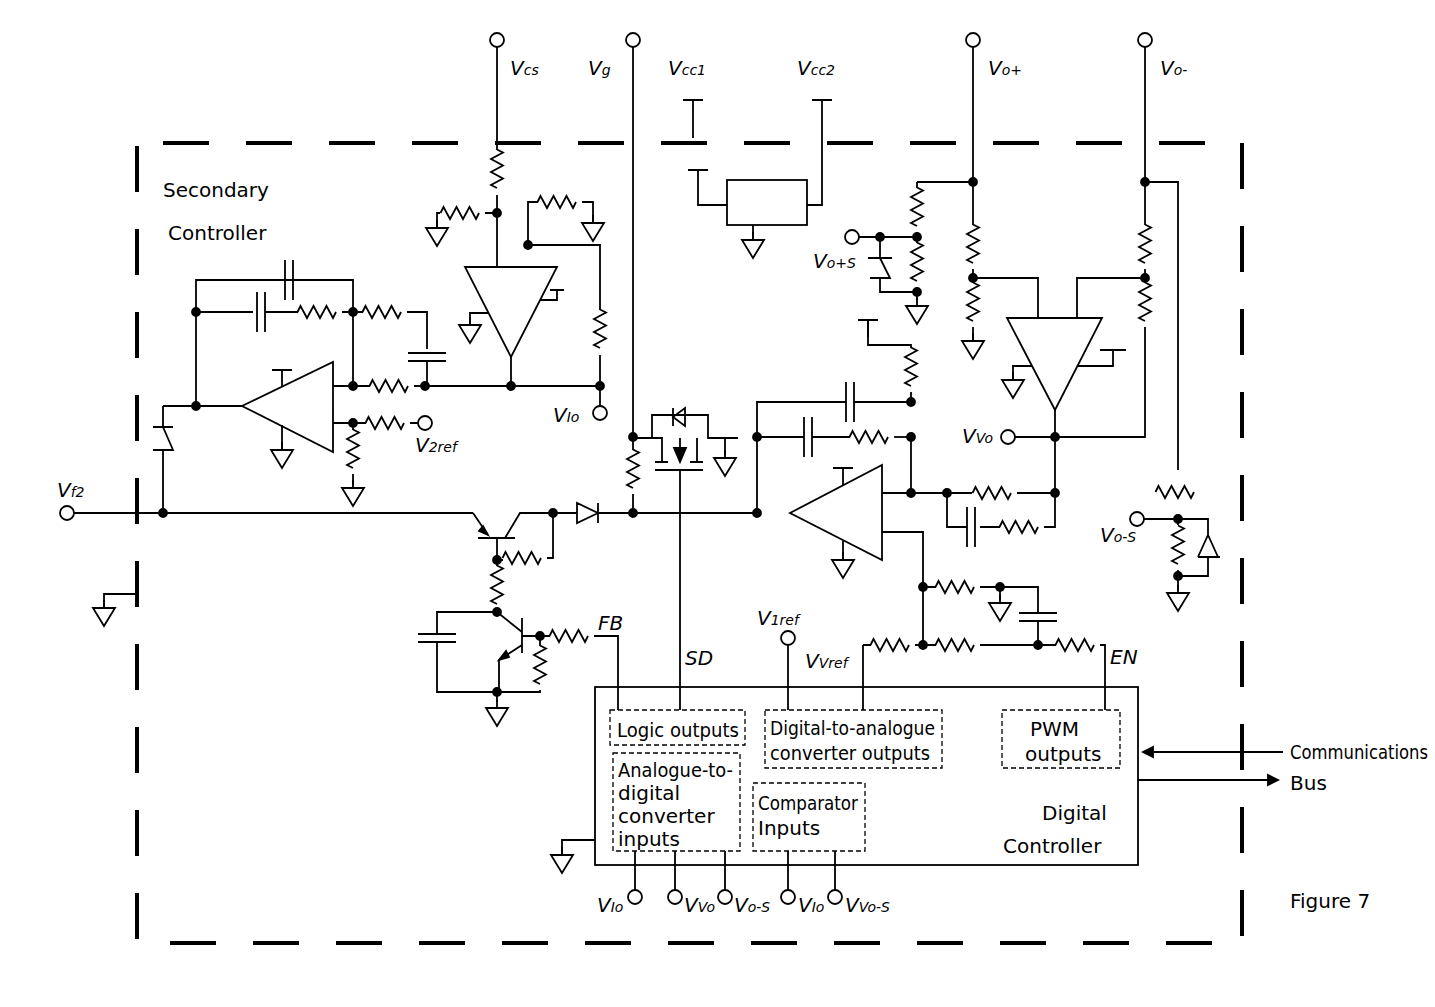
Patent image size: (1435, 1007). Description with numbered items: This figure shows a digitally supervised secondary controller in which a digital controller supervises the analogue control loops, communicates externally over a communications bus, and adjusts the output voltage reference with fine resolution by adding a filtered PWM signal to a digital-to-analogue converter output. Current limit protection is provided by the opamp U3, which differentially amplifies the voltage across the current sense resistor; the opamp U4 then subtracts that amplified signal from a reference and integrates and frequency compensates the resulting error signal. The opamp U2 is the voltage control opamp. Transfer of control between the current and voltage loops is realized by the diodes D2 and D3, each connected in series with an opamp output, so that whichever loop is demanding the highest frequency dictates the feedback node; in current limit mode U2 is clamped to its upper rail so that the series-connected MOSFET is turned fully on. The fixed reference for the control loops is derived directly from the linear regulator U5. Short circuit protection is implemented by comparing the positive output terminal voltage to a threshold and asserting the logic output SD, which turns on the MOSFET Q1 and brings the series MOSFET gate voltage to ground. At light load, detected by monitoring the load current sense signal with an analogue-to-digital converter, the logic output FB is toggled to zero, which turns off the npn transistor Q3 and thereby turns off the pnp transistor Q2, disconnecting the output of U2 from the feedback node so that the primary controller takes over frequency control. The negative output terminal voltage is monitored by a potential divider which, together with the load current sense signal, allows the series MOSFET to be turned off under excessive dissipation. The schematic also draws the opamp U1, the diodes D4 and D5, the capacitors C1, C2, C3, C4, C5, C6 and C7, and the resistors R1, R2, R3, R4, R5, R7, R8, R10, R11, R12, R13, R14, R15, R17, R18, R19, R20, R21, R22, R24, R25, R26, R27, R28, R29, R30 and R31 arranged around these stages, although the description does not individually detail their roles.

The operational amplifier U1 is at (1070, 364).
The voltage control opamp U2 is at (830, 521).
The opamp U3 is at (528, 312).
The opamp U4 is at (279, 414).
The linear regulator U5 is at (728, 205).
The MOSFET Q1 is at (685, 544).
The pnp transistor Q2 is at (513, 519).
The npn transistor Q3 is at (504, 652).
The diode D2 is at (177, 459).
The diode D3 is at (593, 528).
The zener diode D4 is at (878, 271).
The zener diode D5 is at (1199, 563).
The capacitor C1 is at (865, 395).
The capacitor C2 is at (788, 435).
The capacitor C3 is at (1005, 569).
The capacitor C4 is at (420, 356).
The capacitor C5 is at (304, 278).
The capacitor C6 is at (246, 317).
The capacitor C7 is at (447, 652).
The resistor R1 is at (989, 252).
The resistor R2 is at (986, 318).
The resistor R3 is at (1127, 252).
The resistor R4 is at (1103, 357).
The resistor R5 is at (1014, 500).
The resistor R7 is at (881, 424).
The resistor R8 is at (617, 475).
The resistor R10 is at (471, 169).
The resistor R11 is at (461, 228).
The resistor R12 is at (566, 204).
The resistor R13 is at (583, 330).
The resistor R14 is at (379, 374).
The resistor R15 is at (346, 318).
The resistor R17 is at (382, 436).
The resistor R18 is at (338, 464).
The resistor R19 is at (893, 658).
The resistor R20 is at (967, 602).
The resistor R21 is at (896, 209).
The resistor R22 is at (931, 280).
The resistor R24 is at (1161, 569).
The resistor R25 is at (845, 529).
The resistor R26 is at (475, 586).
The resistor R27 is at (579, 653).
The resistor R28 is at (538, 664).
The resistor R29 is at (867, 357).
The resistor R30 is at (1075, 658).
The resistor R31 is at (980, 659).